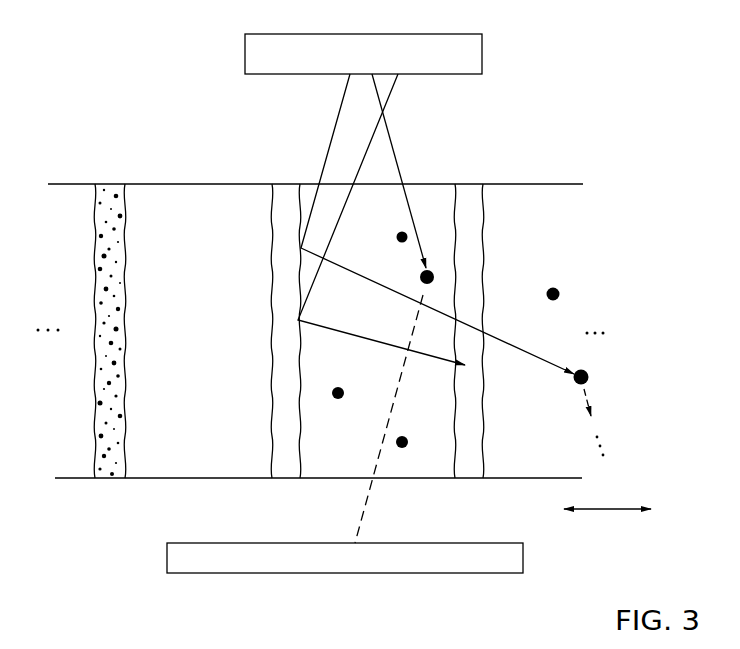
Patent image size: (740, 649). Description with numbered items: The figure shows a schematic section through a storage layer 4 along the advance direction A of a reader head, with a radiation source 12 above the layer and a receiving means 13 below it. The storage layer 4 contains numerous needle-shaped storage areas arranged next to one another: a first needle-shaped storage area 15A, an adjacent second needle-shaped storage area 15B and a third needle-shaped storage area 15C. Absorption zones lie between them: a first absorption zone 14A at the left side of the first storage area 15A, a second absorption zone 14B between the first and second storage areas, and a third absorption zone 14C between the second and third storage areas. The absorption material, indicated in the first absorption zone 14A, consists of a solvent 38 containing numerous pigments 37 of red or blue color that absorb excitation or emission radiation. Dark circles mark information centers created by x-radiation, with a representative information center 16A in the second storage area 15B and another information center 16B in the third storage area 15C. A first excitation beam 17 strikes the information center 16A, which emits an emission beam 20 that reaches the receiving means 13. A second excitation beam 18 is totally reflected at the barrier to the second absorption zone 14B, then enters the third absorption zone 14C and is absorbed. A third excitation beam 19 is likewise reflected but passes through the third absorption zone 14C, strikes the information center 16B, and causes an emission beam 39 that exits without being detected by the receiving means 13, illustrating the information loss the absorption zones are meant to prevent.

The storage layer 4 is at (546, 184).
The radiation source 12 is at (473, 53).
The receiving means 13 is at (305, 565).
The first absorption zone 14A is at (106, 484).
The second absorption zone 14B is at (287, 470).
The third absorption zone 14C is at (470, 470).
The first needle-shaped storage area 15A is at (180, 201).
The second needle-shaped storage area 15B is at (432, 205).
The third needle-shaped storage area 15C is at (562, 243).
The information center 16A is at (420, 275).
The information center 16B is at (593, 375).
The first excitation beam 17 is at (392, 140).
The second excitation beam 18 is at (350, 198).
The third excitation beam 19 is at (330, 137).
The emission beam 20 is at (386, 415).
The pigments 37 is at (97, 240).
The solvent 38 is at (97, 413).
The emission beam 39 is at (590, 398).
The advance direction A is at (610, 511).